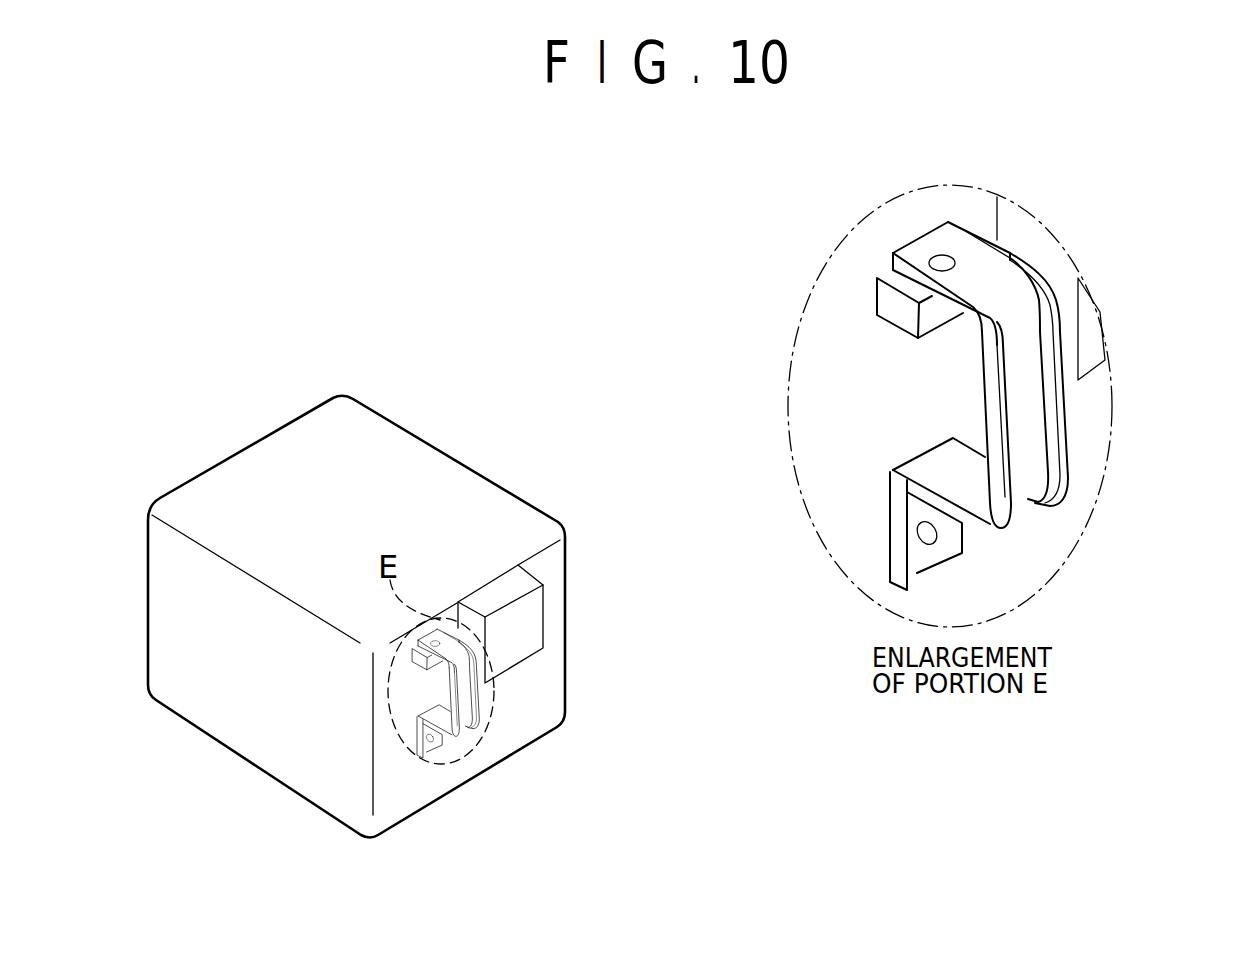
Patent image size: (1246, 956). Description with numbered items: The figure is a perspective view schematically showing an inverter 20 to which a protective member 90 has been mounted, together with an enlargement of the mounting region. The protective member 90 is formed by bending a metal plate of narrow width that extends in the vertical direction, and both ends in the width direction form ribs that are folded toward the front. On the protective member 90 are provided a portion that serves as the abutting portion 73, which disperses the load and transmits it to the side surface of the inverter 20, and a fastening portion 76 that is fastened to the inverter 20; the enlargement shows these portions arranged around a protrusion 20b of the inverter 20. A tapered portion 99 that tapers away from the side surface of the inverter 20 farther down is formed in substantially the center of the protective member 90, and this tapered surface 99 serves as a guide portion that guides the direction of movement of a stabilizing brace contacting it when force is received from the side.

The inverter 20 is at (375, 445).
The protrusion of housing 20b is at (893, 310).
The protective member 90 is at (467, 700).
The fastening portion 76 is at (968, 267).
The abutting portion 73 is at (917, 553).
The tapered portion 99 is at (1033, 412).